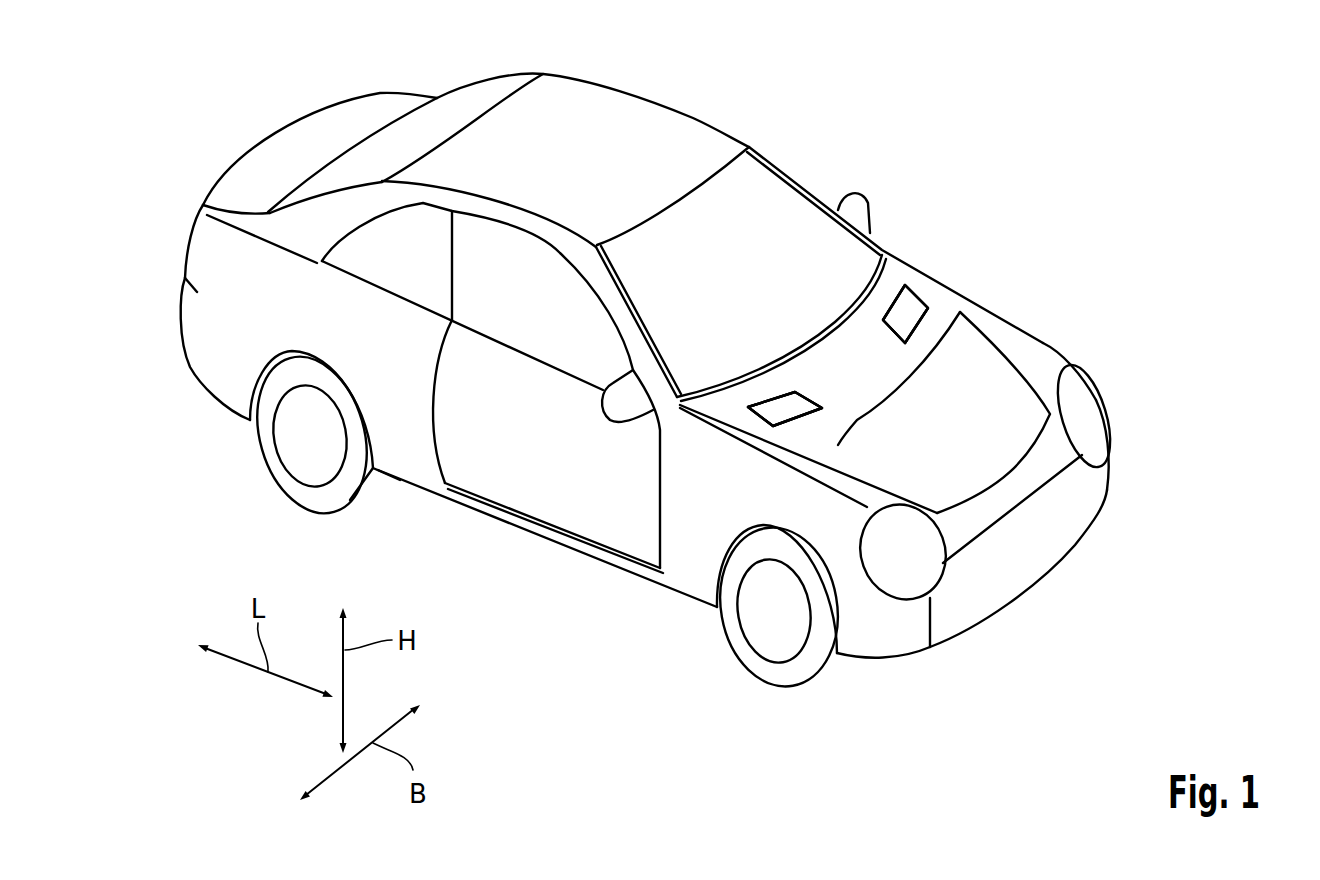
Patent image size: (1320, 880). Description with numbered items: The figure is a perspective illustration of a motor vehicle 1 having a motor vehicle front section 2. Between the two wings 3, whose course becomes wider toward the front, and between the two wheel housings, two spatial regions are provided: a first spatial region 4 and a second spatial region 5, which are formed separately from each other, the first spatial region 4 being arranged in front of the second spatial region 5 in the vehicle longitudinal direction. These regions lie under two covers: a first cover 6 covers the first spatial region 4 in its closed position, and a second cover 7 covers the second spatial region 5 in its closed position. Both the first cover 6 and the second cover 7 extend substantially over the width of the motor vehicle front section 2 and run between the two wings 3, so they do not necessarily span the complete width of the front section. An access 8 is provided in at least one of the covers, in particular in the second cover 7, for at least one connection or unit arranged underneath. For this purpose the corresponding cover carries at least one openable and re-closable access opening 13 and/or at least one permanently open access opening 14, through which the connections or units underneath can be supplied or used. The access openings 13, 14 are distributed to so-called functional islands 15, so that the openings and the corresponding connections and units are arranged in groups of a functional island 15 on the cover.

The motor vehicle 1 is at (673, 367).
The motor vehicle front section 2 is at (1105, 349).
The wings 3 is at (1043, 360).
The first spatial region 4 is at (982, 439).
The second spatial region 5 is at (872, 352).
The first cover 6 is at (943, 462).
The second cover 7 is at (837, 387).
The access 8 is at (910, 307).
The openable and re-closable access opening 13 is at (926, 296).
The permanently open access opening 14 is at (783, 412).
The functional island 15 is at (898, 278).